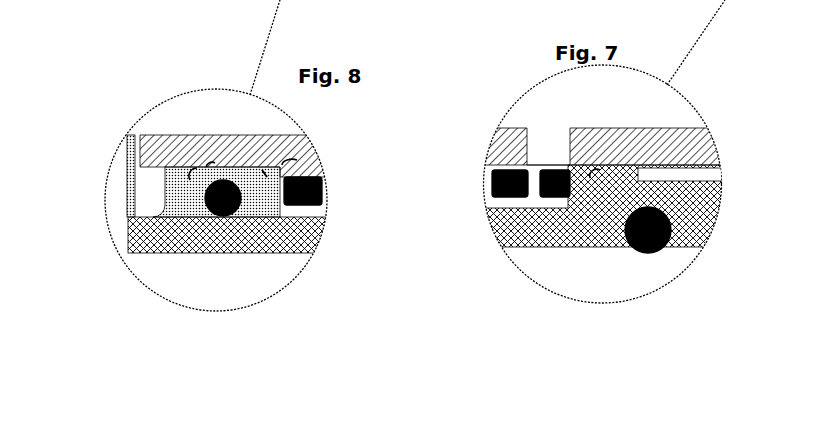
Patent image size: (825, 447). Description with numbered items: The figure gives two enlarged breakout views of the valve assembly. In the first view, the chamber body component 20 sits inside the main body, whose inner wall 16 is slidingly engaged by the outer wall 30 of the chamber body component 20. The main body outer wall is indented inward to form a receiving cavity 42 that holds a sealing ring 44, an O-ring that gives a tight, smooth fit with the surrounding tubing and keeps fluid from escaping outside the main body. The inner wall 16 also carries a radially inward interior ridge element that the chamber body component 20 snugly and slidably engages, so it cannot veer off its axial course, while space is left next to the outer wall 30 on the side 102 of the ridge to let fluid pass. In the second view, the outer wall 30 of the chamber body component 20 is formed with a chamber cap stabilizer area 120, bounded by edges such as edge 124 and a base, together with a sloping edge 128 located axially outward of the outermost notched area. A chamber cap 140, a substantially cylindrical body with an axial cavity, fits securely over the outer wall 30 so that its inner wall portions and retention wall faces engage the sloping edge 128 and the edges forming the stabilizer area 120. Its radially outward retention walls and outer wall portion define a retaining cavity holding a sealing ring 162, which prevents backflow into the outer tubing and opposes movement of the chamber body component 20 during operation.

In FIG. 7, the inner wall 16 is at (540, 247).
In FIG. 8, the chamber body component 20 is at (165, 155).
In FIG. 7, the chamber body component 20 is at (677, 145).
In FIG. 8, the outer wall 30 is at (208, 162).
In FIG. 7, the outer wall 30 is at (714, 165).
In FIG. 7, the receiving cavity 42 is at (677, 228).
In FIG. 7, the sealing ring 44 is at (660, 254).
In FIG. 7, the side of the ridge element 102 is at (516, 204).
In FIG. 8, the chamber cap stabilizer area 120 is at (280, 203).
In FIG. 8, the edge 124 is at (310, 147).
In FIG. 8, the sloping edge 128 is at (128, 247).
In FIG. 8, the chamber cap 140 is at (188, 198).
In FIG. 8, the sealing ring 162 is at (215, 213).